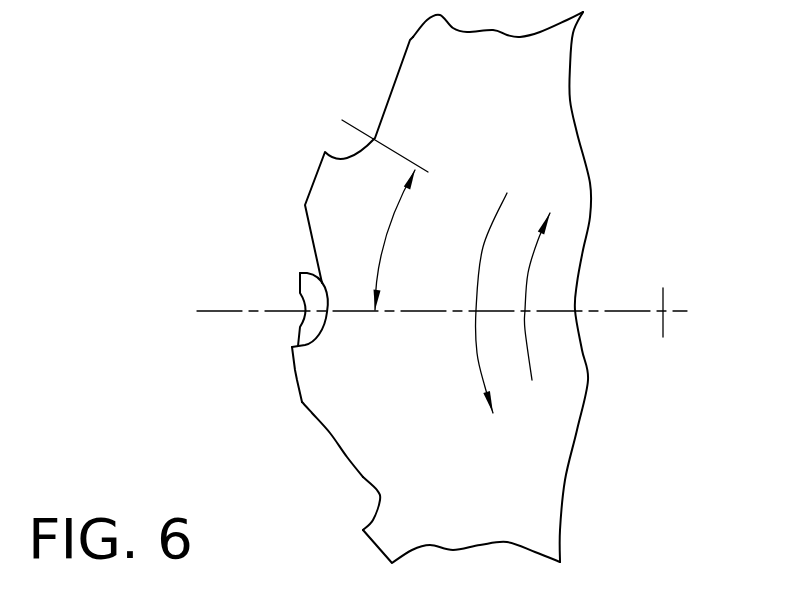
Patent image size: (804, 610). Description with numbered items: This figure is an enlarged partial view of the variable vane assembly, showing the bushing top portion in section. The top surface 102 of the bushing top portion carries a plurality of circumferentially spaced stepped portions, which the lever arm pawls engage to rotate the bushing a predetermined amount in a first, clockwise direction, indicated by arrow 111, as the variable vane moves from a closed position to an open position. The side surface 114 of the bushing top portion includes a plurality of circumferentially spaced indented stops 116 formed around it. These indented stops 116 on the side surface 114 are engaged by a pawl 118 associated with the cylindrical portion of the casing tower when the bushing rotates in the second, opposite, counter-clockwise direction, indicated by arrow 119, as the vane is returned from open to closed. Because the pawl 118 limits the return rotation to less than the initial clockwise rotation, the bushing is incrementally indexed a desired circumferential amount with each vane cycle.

The top surface 102 is at (552, 147).
The pawl 118 is at (300, 283).
The side surface 114 is at (312, 414).
The indented stops 116 is at (350, 491).
The arrow 119 is at (477, 360).
The arrow 111 is at (532, 363).